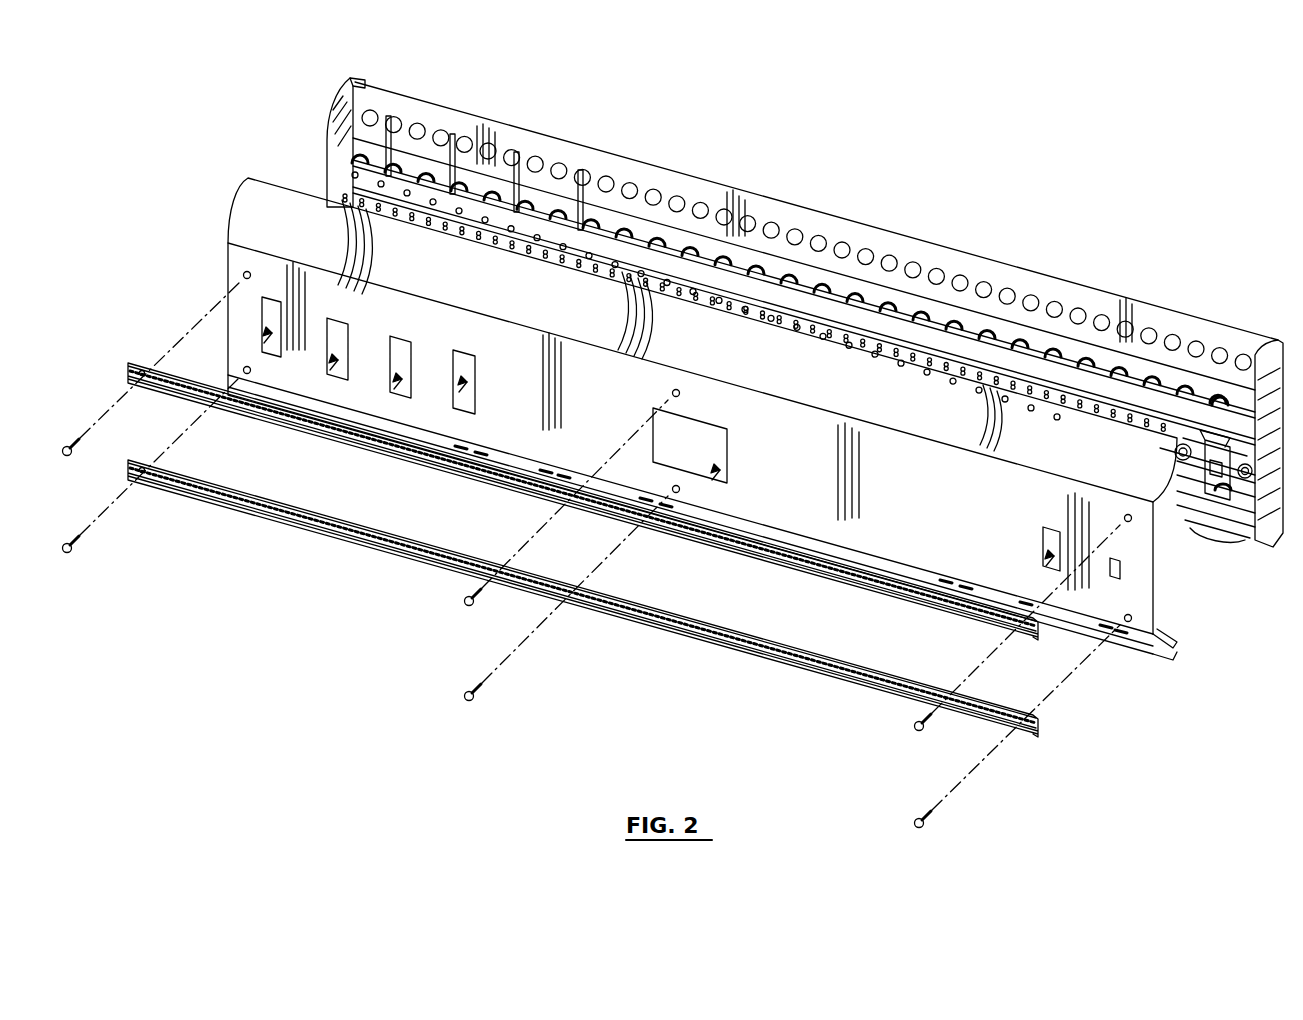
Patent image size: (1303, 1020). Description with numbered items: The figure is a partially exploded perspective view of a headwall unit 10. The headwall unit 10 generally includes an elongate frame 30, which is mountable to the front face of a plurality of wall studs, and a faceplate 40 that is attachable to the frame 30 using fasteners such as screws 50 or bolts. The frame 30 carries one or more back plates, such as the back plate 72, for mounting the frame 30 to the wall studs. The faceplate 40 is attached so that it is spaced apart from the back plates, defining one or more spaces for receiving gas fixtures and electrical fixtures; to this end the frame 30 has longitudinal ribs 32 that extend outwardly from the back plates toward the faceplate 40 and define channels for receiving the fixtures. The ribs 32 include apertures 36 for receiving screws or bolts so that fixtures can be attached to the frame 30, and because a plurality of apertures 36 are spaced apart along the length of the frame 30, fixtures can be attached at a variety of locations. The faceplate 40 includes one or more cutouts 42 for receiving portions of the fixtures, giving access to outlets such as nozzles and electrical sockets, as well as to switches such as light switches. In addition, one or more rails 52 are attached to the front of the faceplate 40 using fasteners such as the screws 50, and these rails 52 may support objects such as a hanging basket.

The headwall unit 10 is at (865, 152).
The frame 30 is at (312, 138).
The longitudinal ribs 32 is at (1240, 408).
The apertures 36 is at (1220, 412).
The faceplate 40 is at (237, 222).
The cutouts 42 is at (265, 345).
The screws 50 is at (73, 457).
The rails 52 is at (687, 690).
The back plate 72 is at (370, 102).